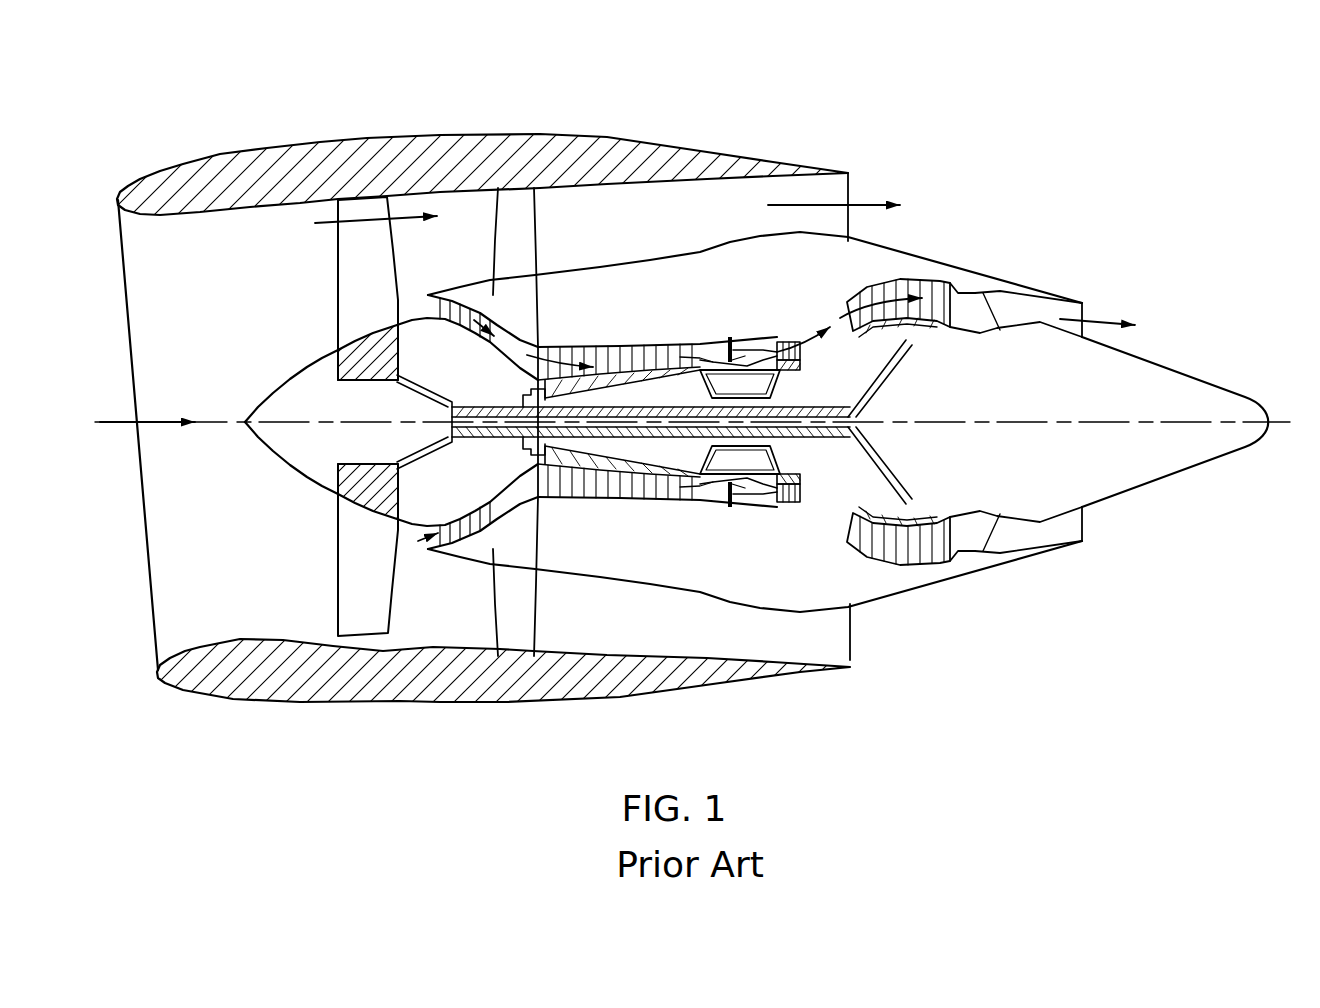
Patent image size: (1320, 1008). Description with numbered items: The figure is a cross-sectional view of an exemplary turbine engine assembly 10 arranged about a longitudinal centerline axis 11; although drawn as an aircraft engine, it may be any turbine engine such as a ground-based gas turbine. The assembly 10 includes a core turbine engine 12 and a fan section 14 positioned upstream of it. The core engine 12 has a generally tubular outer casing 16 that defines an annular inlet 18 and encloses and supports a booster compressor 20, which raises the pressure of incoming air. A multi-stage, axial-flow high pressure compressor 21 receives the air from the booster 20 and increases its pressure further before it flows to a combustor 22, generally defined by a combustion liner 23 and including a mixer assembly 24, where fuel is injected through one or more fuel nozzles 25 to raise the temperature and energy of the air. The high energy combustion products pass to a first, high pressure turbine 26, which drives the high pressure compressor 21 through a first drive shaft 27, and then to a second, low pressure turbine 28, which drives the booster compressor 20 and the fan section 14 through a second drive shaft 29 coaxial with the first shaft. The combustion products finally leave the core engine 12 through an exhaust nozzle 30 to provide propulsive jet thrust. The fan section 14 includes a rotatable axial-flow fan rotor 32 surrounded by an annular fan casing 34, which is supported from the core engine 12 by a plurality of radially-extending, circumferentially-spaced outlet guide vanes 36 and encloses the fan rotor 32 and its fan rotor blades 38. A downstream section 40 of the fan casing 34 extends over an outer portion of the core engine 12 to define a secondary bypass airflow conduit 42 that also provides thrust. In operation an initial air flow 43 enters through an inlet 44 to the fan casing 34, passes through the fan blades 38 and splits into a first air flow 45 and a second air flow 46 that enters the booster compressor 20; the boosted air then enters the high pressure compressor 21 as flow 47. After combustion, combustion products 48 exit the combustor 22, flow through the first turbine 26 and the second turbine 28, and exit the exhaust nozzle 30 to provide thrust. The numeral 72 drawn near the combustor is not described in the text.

The turbine engine assembly 10 is at (1003, 153).
The centerline axis 11 is at (1020, 410).
The core turbine engine 12 is at (700, 312).
The fan section 14 is at (383, 112).
The outer casing 16 is at (690, 600).
The annular inlet 18 is at (420, 541).
The booster compressor 20 is at (485, 500).
The high pressure compressor 21 is at (568, 475).
The combustor 22 is at (740, 495).
The combustion liner 23 is at (745, 500).
The mixer assembly 24 is at (750, 500).
The fuel nozzle 25 is at (755, 500).
The first (high pressure) turbine 26 is at (845, 482).
The first (high pressure) drive shaft 27 is at (760, 385).
The second (low pressure) turbine 28 is at (935, 580).
The second (low pressure) drive shaft 29 is at (505, 403).
The exhaust nozzle 30 is at (1085, 312).
The fan rotor 32 is at (395, 381).
The fan casing 34 is at (395, 700).
The outlet guide vanes 36 is at (538, 225).
The fan rotor blades 38 is at (335, 560).
The downstream section of fan casing 40 is at (745, 150).
The bypass airflow conduit 42 is at (644, 228).
The initial air flow 43 is at (162, 410).
The inlet 44 is at (148, 575).
The first air flow 45 is at (355, 227).
The second air flow 46 is at (428, 292).
The pressurized second air flow 47 is at (572, 350).
The combustion products 48 is at (860, 203).
The high pressure turbine 72 is at (780, 500).